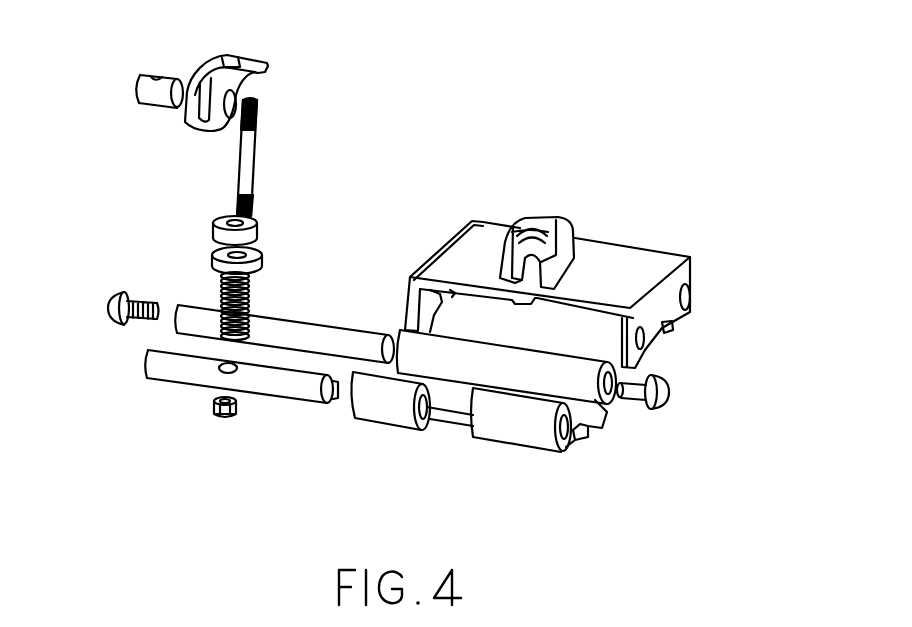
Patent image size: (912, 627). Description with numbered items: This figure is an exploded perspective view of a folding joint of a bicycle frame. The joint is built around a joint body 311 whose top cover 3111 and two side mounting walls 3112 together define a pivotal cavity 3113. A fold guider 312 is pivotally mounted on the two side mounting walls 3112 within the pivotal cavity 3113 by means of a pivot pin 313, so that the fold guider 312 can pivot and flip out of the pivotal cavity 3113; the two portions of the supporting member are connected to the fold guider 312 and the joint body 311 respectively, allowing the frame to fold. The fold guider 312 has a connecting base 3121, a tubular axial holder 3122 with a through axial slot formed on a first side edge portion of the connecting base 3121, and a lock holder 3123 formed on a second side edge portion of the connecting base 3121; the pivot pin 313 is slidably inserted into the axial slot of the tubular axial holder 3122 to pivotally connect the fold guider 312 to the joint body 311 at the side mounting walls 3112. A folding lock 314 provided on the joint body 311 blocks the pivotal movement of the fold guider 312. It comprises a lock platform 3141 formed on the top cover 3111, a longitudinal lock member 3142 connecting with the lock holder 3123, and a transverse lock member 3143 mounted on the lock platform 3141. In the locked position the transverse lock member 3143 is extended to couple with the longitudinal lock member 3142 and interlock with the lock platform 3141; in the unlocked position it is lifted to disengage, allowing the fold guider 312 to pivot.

The joint body 311 is at (611, 203).
The top cover 3111 is at (640, 268).
The side mounting walls 3112 is at (864, 288).
The pivotal cavity 3113 is at (565, 335).
The fold guider 312 is at (579, 439).
The connecting base 3121 is at (758, 493).
The tubular axial holder 3122 is at (575, 375).
The lock holder 3123 is at (375, 408).
The pivot pin 313 is at (298, 338).
The folding lock 314 is at (148, 60).
The lock platform 3141 is at (527, 235).
The longitudinal lock member 3142 is at (173, 380).
The transverse lock member 3143 is at (245, 162).